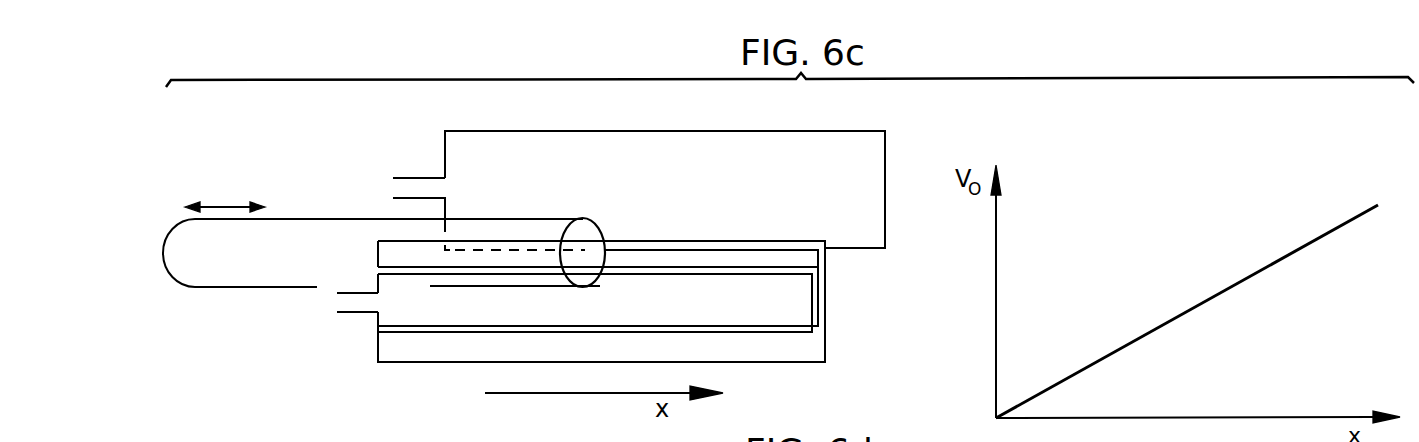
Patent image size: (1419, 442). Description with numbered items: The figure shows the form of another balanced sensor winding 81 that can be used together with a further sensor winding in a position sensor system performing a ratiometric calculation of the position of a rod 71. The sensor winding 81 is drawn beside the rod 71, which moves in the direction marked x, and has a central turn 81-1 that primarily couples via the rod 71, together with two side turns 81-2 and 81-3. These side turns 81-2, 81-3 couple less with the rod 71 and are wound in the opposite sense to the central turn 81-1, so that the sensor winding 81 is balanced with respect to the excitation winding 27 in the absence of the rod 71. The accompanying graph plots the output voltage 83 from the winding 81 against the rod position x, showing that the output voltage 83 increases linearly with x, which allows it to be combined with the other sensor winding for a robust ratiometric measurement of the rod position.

The excitation winding 27 is at (710, 131).
The rod 71 is at (242, 268).
The balanced sensor winding 81 is at (573, 276).
The central turn 81-1 is at (378, 313).
The side turn 81-2 is at (377, 345).
The side turn 81-3 is at (377, 250).
The output voltage 83 is at (1215, 294).